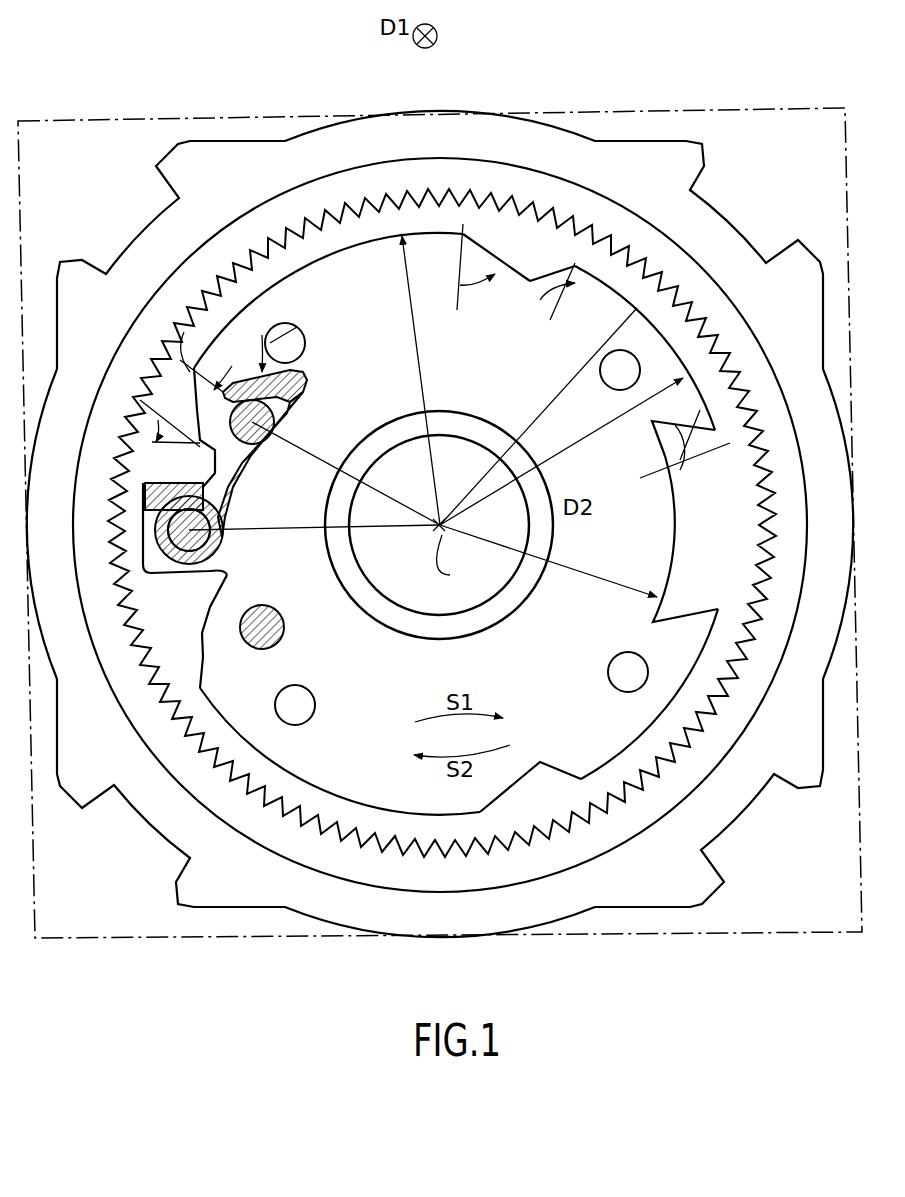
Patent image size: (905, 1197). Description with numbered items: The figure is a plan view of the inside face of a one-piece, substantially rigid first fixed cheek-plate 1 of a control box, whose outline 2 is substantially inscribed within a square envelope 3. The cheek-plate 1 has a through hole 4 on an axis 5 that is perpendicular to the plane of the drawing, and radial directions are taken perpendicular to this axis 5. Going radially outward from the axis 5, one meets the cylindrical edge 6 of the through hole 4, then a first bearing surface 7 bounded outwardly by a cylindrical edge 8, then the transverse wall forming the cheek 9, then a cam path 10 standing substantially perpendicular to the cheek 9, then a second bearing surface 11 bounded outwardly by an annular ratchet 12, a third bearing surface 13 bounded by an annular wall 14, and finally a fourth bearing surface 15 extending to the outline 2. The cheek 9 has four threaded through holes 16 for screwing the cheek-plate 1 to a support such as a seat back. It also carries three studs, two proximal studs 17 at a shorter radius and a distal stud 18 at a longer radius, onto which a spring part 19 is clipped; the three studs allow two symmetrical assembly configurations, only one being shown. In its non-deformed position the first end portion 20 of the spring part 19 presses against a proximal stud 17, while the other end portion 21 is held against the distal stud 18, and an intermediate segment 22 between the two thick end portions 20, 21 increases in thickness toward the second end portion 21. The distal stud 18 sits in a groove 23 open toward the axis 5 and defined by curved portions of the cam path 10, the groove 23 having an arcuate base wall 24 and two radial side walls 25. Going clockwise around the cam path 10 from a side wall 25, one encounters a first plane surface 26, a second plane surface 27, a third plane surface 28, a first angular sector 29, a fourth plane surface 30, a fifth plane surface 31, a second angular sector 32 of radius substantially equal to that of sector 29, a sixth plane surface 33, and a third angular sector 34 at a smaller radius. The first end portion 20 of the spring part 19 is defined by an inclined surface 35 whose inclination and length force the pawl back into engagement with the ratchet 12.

The first fixed cheek-plate 1 is at (604, 104).
The outline 2 is at (546, 122).
The square envelope 3 is at (84, 113).
The through hole 4 is at (439, 508).
The axis 5 is at (442, 520).
The cylindrical edge 6 is at (439, 508).
The first bearing surface 7 is at (457, 428).
The cylindrical edge 8 is at (484, 416).
The cheek 9 is at (305, 762).
The cam path 10 is at (446, 815).
The second bearing surface 11 is at (185, 655).
The annular ratchet 12 is at (385, 856).
The third bearing surface 13 is at (442, 589).
The annular wall 14 is at (200, 785).
The fourth bearing surface 15 is at (130, 745).
The threaded through holes 16 is at (306, 343).
The proximal studs 17 is at (268, 427).
The distal stud 18 is at (216, 546).
The spring part 19 is at (246, 487).
The first end portion 20 is at (302, 396).
The second end portion 21 is at (143, 512).
The intermediate segment 22 is at (226, 518).
The groove 23 is at (152, 573).
The base wall 24 is at (130, 545).
The side walls 25 is at (145, 462).
The first plane surface 26 is at (255, 445).
The second plane surface 27 is at (197, 410).
The third plane surface 28 is at (180, 338).
The first angular sector 29 is at (333, 259).
The fourth plane surface 30 is at (523, 279).
The fifth plane surface 31 is at (548, 267).
The second angular sector 32 is at (637, 308).
The sixth plane surface 33 is at (700, 423).
The third angular sector 34 is at (662, 559).
The inclined surface 35 is at (247, 372).